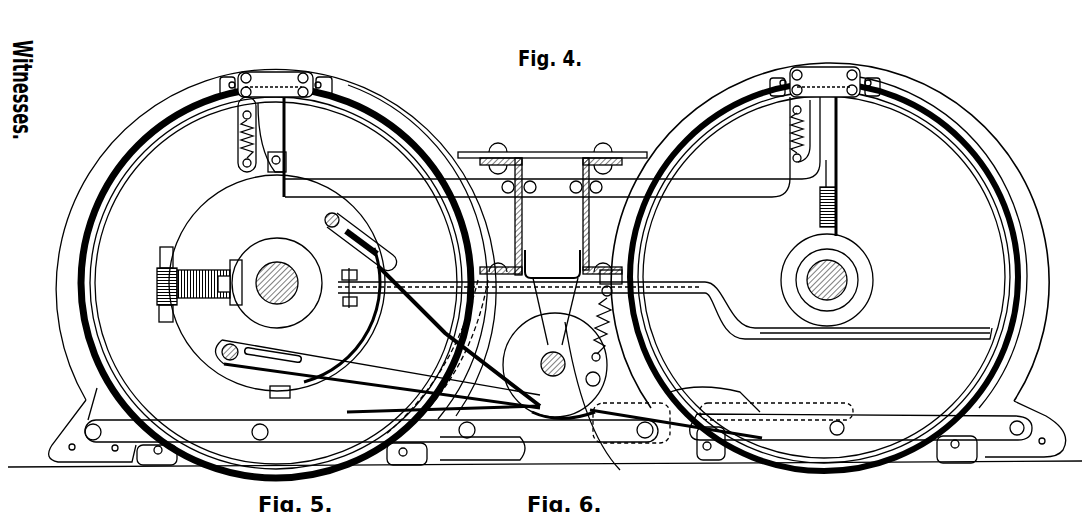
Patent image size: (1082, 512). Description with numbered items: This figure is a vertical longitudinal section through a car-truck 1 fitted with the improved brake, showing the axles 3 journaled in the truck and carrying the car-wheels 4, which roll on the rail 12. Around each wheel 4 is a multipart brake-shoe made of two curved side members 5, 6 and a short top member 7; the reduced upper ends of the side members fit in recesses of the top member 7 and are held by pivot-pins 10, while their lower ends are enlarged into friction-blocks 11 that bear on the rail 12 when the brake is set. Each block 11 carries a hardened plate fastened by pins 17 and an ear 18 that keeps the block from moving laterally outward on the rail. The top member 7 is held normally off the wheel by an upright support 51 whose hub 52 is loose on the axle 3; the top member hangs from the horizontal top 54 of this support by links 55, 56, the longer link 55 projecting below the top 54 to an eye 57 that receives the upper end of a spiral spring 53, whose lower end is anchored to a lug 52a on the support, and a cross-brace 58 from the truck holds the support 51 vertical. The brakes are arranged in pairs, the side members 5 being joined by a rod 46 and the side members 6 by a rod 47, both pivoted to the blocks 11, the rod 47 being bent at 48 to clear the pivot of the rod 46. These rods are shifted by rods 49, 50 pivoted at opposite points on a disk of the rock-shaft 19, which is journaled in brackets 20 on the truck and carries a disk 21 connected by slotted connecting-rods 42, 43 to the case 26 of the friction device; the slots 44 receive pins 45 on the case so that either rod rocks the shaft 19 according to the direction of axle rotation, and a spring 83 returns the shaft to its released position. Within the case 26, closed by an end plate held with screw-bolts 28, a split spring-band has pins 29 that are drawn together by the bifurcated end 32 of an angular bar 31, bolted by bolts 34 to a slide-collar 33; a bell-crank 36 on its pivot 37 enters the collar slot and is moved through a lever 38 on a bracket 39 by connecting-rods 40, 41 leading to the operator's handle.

The truck 1 is at (556, 170).
The axle 3 is at (270, 280).
The car-wheel 4 is at (360, 130).
The curved side member 5 is at (72, 240).
The curved side member 6 is at (440, 156).
The top member 7 is at (283, 72).
The pivot-pin 10 is at (323, 86).
The friction-block 11 is at (100, 333).
The rail 12 is at (197, 462).
The pin 17 is at (115, 452).
The ear 18 is at (455, 462).
The rock-shaft 19 is at (563, 372).
The bracket 20 is at (625, 330).
The disk 21 is at (640, 285).
The case 26 is at (208, 322).
The screw-bolt 28 is at (287, 163).
The pin 29 is at (158, 272).
The angular bar 31 is at (195, 270).
The bifurcated end 32 is at (165, 247).
The slide-collar 33 is at (286, 250).
The bolt 34 is at (238, 280).
The bell-crank 36 is at (385, 262).
The pivot 37 is at (348, 308).
The lever 38 is at (542, 268).
The bracket 39 is at (630, 256).
The connecting-rod 40 is at (556, 270).
The connecting-rod 41 is at (946, 328).
The connecting-rod 42 is at (437, 303).
The connecting-rod 43 is at (375, 400).
The longitudinal slot 44 is at (348, 245).
The pin 45 is at (228, 353).
The rod 46 is at (342, 220).
The rod 47 is at (908, 412).
The bend 48 is at (695, 390).
The rod 49 is at (337, 410).
The rod 50 is at (775, 410).
The upright support 51 is at (268, 127).
The hub 52 is at (862, 246).
The lug 52a is at (260, 155).
The spiral spring 53 is at (242, 145).
The horizontal top 54 is at (275, 72).
The link 55 is at (238, 80).
The link 56 is at (308, 75).
The eye 57 is at (238, 112).
The cross-brace 58 is at (386, 190).
The spring 83 is at (612, 320).